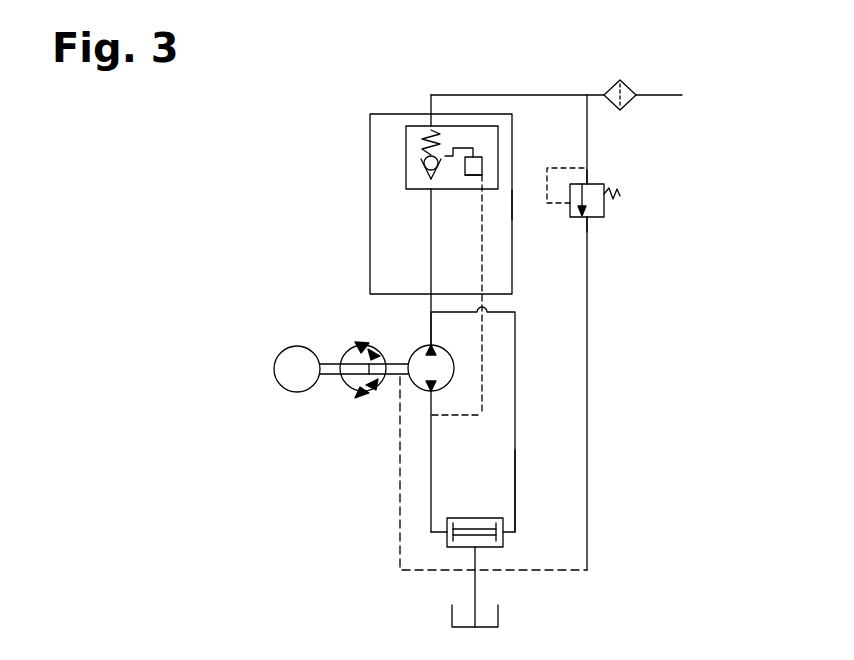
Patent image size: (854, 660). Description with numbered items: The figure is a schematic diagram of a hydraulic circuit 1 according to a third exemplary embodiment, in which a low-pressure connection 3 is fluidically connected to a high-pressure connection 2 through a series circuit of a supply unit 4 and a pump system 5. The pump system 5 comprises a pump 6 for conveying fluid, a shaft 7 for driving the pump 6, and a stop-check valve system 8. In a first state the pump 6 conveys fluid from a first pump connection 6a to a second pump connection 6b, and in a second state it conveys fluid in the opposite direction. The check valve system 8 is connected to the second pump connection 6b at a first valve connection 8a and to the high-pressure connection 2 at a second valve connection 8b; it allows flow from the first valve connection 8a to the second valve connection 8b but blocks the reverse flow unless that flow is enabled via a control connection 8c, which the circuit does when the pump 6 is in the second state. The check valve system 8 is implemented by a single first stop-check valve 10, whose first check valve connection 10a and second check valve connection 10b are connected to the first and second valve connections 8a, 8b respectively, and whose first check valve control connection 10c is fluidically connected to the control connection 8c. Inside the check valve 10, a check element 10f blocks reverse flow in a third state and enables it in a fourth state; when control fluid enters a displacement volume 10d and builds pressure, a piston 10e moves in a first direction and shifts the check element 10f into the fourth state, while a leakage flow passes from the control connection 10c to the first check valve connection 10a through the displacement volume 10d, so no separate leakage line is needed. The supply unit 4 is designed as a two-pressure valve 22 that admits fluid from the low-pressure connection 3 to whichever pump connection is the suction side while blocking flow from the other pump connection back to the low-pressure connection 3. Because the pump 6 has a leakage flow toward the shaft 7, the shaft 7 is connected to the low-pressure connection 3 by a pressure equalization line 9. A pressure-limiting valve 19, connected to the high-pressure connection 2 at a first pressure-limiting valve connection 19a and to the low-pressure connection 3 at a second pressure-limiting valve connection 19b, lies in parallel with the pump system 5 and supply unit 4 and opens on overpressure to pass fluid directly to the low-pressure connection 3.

The hydraulic circuit 1 is at (198, 139).
The high-pressure connection 2 is at (660, 95).
The low-pressure connection 3 is at (477, 592).
The supply unit 4 is at (525, 537).
The pump system 5 is at (378, 432).
The pump 6 is at (403, 395).
The first pump connection 6a is at (434, 392).
The second pump connection 6b is at (434, 346).
The shaft 7 is at (332, 376).
The stop-check valve system 8 is at (370, 128).
The first valve connection 8a is at (427, 296).
The second valve connection 8b is at (430, 108).
The control connection 8c is at (487, 297).
The pressure equalization line 9 is at (398, 550).
The first stop-check valve 10 is at (406, 153).
The first check valve connection 10a is at (427, 189).
The second check valve connection 10b is at (432, 128).
The first check valve control connection 10c is at (512, 205).
The displacement volume 10d is at (466, 176).
The piston 10e is at (481, 158).
The check element 10f is at (404, 138).
The pressure-limiting valve 19 is at (610, 199).
The first pressure-limiting valve connection 19a is at (587, 183).
The second pressure-limiting valve connection 19b is at (587, 218).
The two-pressure valve 22 is at (477, 518).